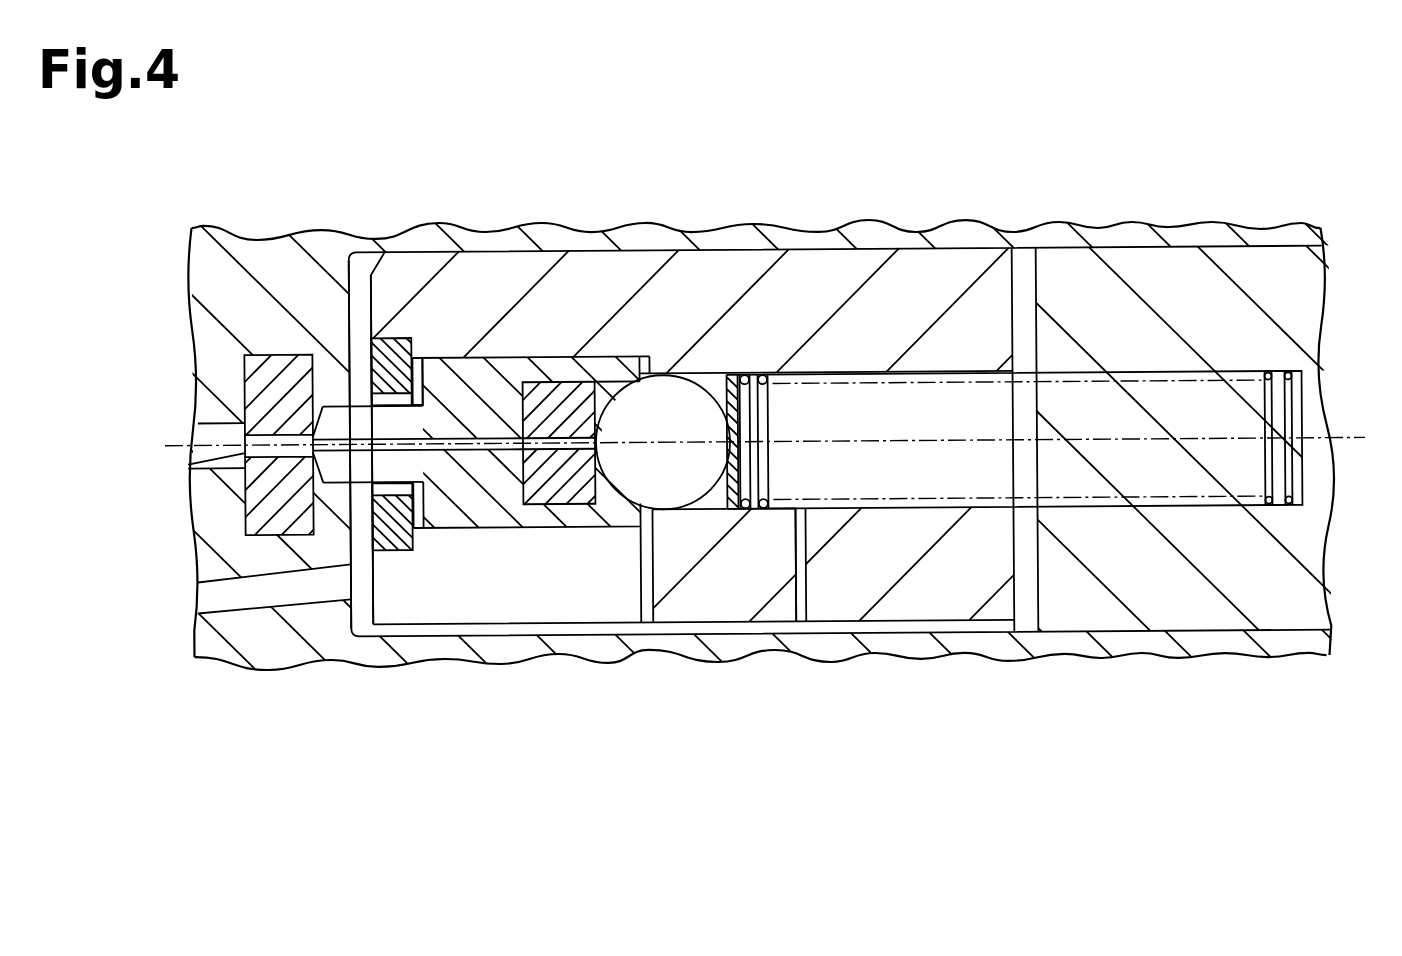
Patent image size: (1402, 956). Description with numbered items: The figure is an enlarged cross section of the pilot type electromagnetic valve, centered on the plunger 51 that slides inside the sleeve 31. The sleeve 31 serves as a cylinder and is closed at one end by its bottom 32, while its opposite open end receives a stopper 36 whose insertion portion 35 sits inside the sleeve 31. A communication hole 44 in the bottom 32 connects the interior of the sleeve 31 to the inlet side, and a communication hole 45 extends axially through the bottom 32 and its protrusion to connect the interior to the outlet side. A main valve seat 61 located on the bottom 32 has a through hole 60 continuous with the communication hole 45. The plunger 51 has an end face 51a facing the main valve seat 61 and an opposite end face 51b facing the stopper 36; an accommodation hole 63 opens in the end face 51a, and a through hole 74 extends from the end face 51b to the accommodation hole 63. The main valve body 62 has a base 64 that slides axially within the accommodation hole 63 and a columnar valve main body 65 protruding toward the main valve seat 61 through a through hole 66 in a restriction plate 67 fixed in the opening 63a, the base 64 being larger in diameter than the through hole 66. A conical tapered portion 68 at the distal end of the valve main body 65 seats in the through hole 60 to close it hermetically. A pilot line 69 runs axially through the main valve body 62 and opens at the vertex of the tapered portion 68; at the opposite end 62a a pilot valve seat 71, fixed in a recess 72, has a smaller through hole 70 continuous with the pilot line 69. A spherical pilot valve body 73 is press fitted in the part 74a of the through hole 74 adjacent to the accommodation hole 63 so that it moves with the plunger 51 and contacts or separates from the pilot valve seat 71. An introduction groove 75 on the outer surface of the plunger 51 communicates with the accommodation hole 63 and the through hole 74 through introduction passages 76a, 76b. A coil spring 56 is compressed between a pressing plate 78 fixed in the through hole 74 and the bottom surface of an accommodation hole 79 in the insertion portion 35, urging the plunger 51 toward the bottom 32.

The sleeve 31 is at (193, 226).
The bottom 32 is at (243, 242).
The insertion portion 35 is at (1003, 438).
The stopper 36 is at (1131, 250).
The communication hole 44 is at (270, 600).
The communication hole 45 is at (200, 432).
The plunger 51 is at (740, 250).
The end face 51a is at (368, 290).
The end face 51b is at (1022, 270).
The coil spring 56 is at (955, 376).
The through hole 60 is at (188, 461).
The main valve seat 61 is at (262, 352).
The main valve body 62 is at (465, 356).
The end 62a is at (646, 370).
The accommodation hole 63 is at (497, 526).
The opening 63a is at (395, 347).
The base 64 is at (443, 370).
The valve main body 65 is at (337, 404).
The through hole 66 is at (414, 516).
The restriction plate 67 is at (398, 548).
The tapered portion 68 is at (305, 420).
The pilot line 69 is at (497, 437).
The through hole 70 is at (567, 450).
The pilot valve seat 71 is at (556, 381).
The recess 72 is at (610, 372).
The pilot valve body 73 is at (719, 377).
The through hole 74 is at (848, 376).
The part 74a is at (727, 378).
The introduction groove 75 is at (742, 622).
The introduction passage 76a is at (645, 605).
The introduction passage 76b is at (801, 586).
The pressing plate 78 is at (740, 502).
The accommodation hole 79 is at (1129, 376).